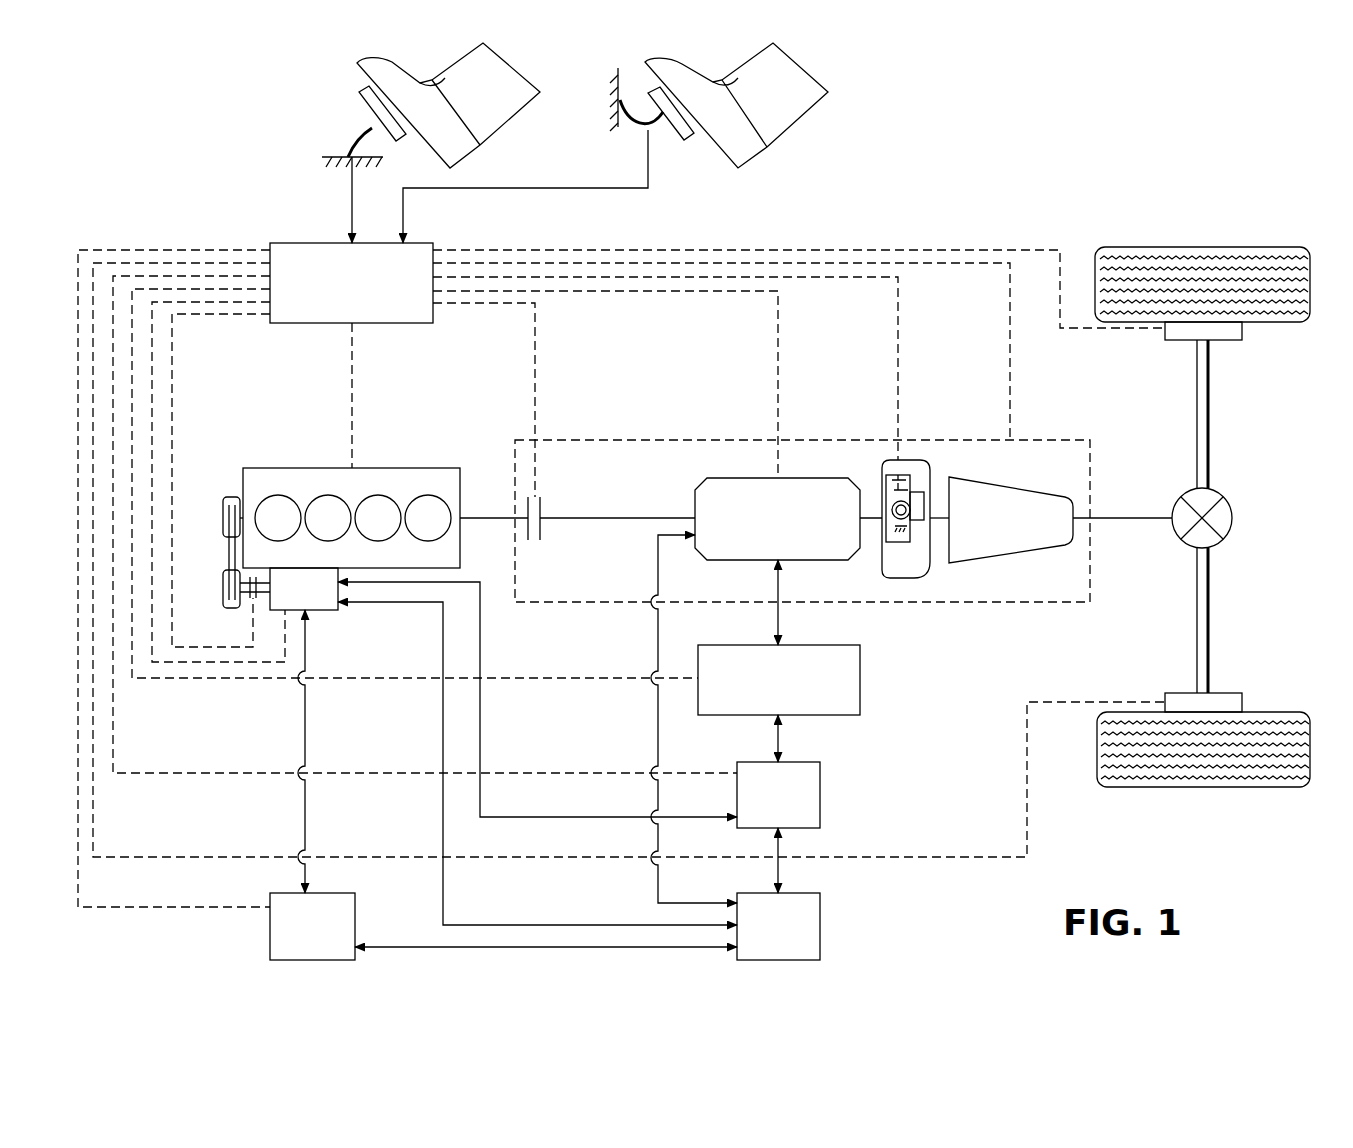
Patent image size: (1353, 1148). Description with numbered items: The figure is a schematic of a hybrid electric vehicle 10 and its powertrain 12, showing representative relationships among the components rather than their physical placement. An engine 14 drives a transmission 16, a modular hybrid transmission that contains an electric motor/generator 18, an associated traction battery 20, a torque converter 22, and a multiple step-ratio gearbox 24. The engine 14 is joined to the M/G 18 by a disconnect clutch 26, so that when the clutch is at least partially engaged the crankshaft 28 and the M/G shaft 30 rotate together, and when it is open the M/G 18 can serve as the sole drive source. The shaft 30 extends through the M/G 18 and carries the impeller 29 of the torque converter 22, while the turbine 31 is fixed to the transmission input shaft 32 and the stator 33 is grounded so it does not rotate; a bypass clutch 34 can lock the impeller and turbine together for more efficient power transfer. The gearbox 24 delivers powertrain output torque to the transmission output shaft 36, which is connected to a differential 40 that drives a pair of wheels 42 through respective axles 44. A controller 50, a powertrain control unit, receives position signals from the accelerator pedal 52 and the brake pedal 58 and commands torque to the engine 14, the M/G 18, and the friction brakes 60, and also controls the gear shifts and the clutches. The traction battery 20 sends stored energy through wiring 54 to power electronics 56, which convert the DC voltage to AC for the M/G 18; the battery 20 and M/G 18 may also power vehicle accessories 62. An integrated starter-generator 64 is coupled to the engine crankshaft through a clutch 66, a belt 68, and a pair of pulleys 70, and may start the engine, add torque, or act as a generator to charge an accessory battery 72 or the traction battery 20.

The hybrid electric vehicle (HEV) 10 is at (900, 152).
The powertrain 12 is at (413, 720).
The engine 14 is at (303, 468).
The transmission 16 is at (853, 440).
The electric motor/generator (M/G) 18 is at (742, 478).
The traction battery 20 is at (820, 797).
The torque converter 22 is at (900, 578).
The gearbox 24 is at (1010, 563).
The disconnect clutch 26 is at (541, 507).
The crankshaft 28 is at (245, 515).
The impeller 29 is at (918, 500).
The M/G shaft 30 is at (643, 518).
The turbine 31 is at (883, 497).
The transmission input shaft 32 is at (942, 512).
The stator 33 is at (896, 530).
The torque converter bypass clutch 34 is at (898, 462).
The transmission output shaft 36 is at (1126, 518).
The differential 40 is at (1234, 518).
The wheels 42 is at (1205, 247).
The axles 44 is at (1210, 408).
The controller 50 is at (310, 243).
The accelerator pedal 52 is at (360, 105).
The wiring 54 is at (775, 742).
The power electronics 56 is at (860, 682).
The brake pedal 58 is at (690, 140).
The friction brakes 60 is at (1242, 331).
The vehicle accessories 62 is at (820, 929).
The integrated starter-generator (ISG) 64 is at (325, 610).
The clutch 66 is at (250, 598).
The belt 68 is at (222, 560).
The pulleys 70 is at (222, 518).
The accessory battery 72 is at (355, 927).